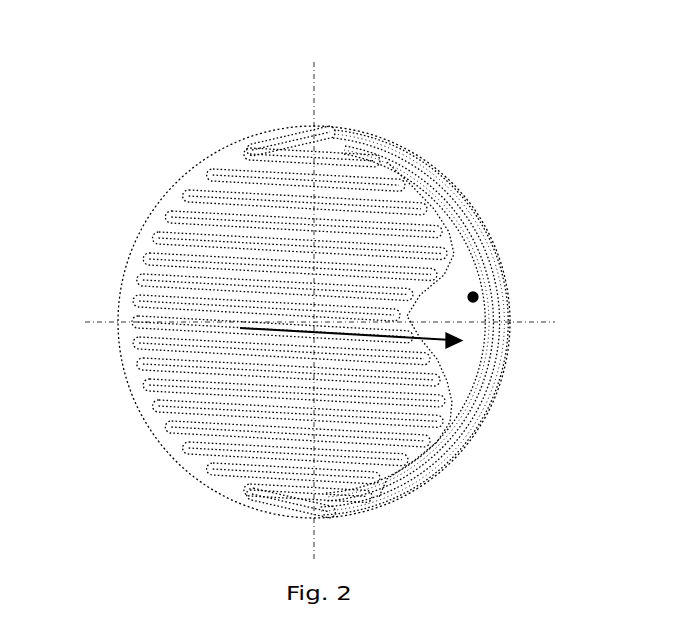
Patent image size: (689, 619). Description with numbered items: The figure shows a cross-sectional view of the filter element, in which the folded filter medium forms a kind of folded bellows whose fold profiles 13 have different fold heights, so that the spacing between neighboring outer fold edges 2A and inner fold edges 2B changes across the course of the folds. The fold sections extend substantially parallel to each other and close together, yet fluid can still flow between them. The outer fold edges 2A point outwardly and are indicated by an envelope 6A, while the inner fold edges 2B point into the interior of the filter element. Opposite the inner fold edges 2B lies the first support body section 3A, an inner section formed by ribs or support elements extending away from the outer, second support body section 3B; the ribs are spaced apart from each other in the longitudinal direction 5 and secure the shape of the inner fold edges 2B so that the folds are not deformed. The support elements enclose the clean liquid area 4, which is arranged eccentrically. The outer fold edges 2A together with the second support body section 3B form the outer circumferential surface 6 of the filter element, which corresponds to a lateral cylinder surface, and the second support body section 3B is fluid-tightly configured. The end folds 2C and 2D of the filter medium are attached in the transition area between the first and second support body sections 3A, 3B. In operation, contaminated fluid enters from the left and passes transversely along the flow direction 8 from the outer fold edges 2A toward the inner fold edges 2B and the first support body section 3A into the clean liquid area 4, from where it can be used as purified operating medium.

The outer fold edges 2A is at (183, 196).
The inner fold edges 2B is at (405, 184).
The end fold 2C is at (357, 132).
The end fold 2D is at (328, 514).
The first support body section 3A is at (450, 407).
The second support body section 3B is at (403, 484).
The clean liquid area 4 is at (475, 296).
The longitudinal axis 5 is at (305, 331).
The outer circumferential surface 6 is at (283, 133).
The envelope of the outer fold edges 6A is at (120, 304).
The flow direction 8 is at (420, 337).
The fold profiles 13 is at (186, 463).